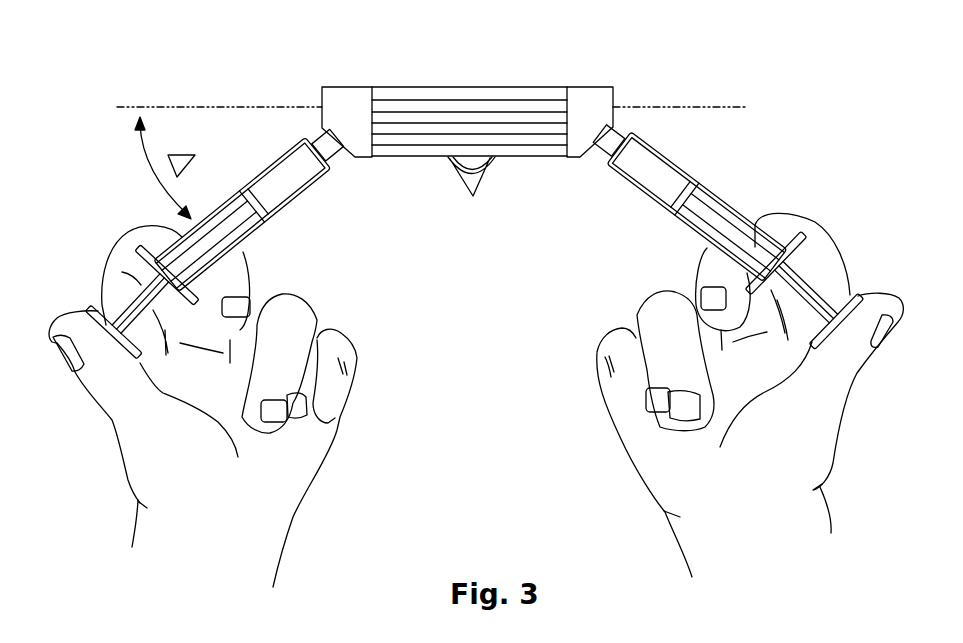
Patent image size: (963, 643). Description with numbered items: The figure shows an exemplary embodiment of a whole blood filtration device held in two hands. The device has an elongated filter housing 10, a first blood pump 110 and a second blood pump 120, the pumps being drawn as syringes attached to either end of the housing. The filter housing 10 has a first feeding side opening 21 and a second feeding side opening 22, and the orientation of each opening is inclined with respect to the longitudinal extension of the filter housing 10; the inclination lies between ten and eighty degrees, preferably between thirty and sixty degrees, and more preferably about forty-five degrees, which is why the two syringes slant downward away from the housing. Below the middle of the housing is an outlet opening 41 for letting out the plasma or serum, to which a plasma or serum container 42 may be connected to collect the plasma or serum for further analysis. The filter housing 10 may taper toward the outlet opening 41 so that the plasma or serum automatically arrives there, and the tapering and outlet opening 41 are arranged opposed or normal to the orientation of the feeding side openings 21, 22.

The filter housing 10 is at (464, 164).
The first feeding side opening 21 is at (318, 130).
The second feeding side opening 22 is at (620, 128).
The outlet opening 41 is at (496, 242).
The plasma or serum container 42 is at (480, 180).
The first blood pump 110 is at (287, 177).
The second blood pump 120 is at (655, 168).